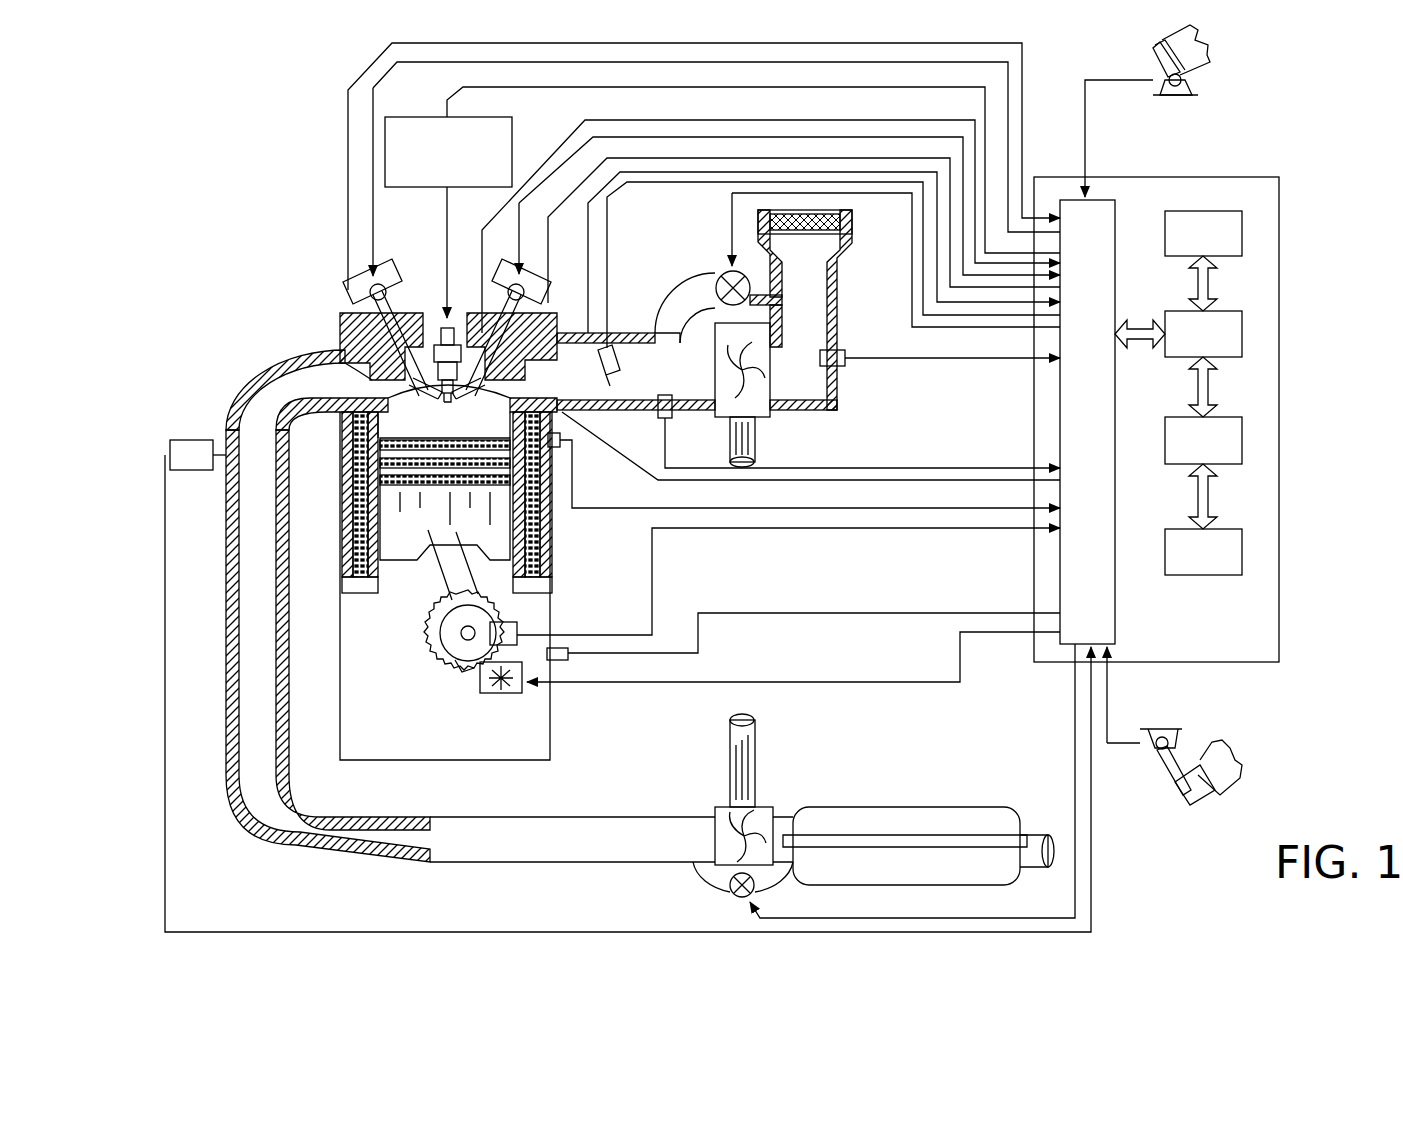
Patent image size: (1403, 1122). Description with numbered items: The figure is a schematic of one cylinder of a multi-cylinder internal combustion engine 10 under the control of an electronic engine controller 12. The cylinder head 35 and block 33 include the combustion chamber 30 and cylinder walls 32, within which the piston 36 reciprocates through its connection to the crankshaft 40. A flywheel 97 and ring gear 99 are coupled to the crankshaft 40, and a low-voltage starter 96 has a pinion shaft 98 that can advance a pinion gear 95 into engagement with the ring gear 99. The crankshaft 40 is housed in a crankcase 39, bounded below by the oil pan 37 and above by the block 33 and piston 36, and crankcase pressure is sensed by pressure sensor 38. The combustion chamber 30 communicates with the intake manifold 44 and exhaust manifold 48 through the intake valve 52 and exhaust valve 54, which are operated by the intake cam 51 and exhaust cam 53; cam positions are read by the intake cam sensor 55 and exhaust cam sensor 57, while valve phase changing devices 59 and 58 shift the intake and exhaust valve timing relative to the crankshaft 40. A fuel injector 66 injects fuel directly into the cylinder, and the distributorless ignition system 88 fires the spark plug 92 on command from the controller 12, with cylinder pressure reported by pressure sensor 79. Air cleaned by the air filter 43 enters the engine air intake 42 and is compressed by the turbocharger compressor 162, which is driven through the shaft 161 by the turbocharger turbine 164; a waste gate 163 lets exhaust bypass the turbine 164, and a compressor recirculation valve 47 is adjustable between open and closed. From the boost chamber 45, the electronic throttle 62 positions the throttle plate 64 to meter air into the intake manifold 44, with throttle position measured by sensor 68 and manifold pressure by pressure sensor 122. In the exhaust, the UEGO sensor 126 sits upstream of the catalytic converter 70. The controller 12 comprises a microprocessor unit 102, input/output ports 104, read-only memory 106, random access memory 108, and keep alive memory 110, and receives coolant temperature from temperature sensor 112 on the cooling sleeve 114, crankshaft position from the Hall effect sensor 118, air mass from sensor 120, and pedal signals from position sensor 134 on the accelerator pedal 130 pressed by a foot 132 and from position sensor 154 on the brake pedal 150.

The internal combustion engine 10 is at (270, 262).
The electronic engine controller 12 is at (1282, 180).
The combustion chamber 30 is at (447, 412).
The cylinder walls 32 is at (382, 578).
The block 33 is at (342, 457).
The cylinder head 35 is at (336, 312).
The piston 36 is at (430, 530).
The oil pan 37 is at (552, 742).
The pressure sensor 38 is at (570, 656).
The crankcase 39 is at (360, 677).
The crankshaft 40 is at (450, 672).
The engine air intake 42 is at (672, 240).
The air filter 43 is at (830, 232).
The intake manifold 44 is at (588, 389).
The boost chamber 45 is at (688, 389).
The compressor recirculation valve 47 is at (730, 272).
The exhaust manifold 48 is at (322, 391).
The intake cam 51 is at (514, 270).
The intake valve 52 is at (500, 382).
The exhaust cam 53 is at (372, 292).
The exhaust valve 54 is at (345, 372).
The intake cam sensor 55 is at (522, 304).
The exhaust cam sensor 57 is at (362, 302).
The valve phase changing device 58 is at (384, 305).
The valve phase changing device 59 is at (528, 288).
The electronic throttle 62 is at (614, 368).
The throttle plate 64 is at (610, 393).
The fuel injector 66 is at (561, 444).
The throttle position sensor 68 is at (580, 343).
The catalytic converter 70 is at (840, 807).
The cylinder pressure sensor 79 is at (452, 345).
The distributorless ignition system 88 is at (400, 117).
The spark plug 92 is at (441, 328).
The pinion gear 95 is at (505, 694).
The starter 96 is at (512, 694).
The flywheel 97 is at (432, 640).
The pinion shaft 98 is at (497, 694).
The ring gear 99 is at (458, 684).
The microprocessor unit 102 is at (1242, 334).
The input/output ports 104 is at (1113, 206).
The read-only memory 106 is at (1242, 233).
The random access memory 108 is at (1242, 438).
The keep alive memory 110 is at (1242, 549).
The temperature sensor 112 is at (810, 474).
The cooling sleeve 114 is at (552, 533).
The Hall effect sensor 118 is at (518, 628).
The air mass sensor 120 is at (845, 355).
The pressure sensor 122 is at (658, 416).
The Universal Exhaust Gas Oxygen sensor 126 is at (170, 448).
The accelerator pedal 130 is at (1152, 58).
The foot 132 is at (1207, 42).
The position sensor 134 is at (1190, 82).
The brake pedal 150 is at (1183, 792).
The position sensor 154 is at (1148, 736).
The shaft 161 is at (730, 440).
The turbocharger compressor 162 is at (750, 400).
The waste gate 163 is at (737, 895).
The turbocharger turbine 164 is at (717, 807).